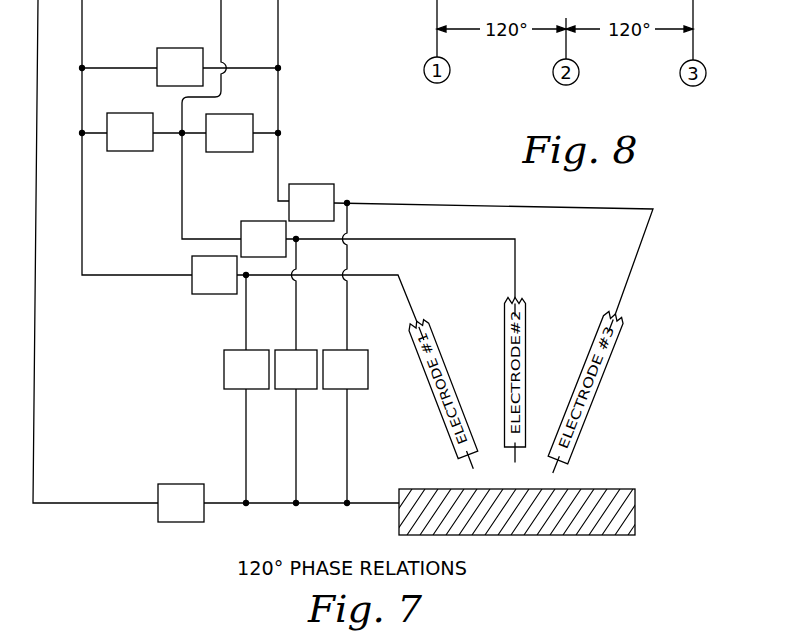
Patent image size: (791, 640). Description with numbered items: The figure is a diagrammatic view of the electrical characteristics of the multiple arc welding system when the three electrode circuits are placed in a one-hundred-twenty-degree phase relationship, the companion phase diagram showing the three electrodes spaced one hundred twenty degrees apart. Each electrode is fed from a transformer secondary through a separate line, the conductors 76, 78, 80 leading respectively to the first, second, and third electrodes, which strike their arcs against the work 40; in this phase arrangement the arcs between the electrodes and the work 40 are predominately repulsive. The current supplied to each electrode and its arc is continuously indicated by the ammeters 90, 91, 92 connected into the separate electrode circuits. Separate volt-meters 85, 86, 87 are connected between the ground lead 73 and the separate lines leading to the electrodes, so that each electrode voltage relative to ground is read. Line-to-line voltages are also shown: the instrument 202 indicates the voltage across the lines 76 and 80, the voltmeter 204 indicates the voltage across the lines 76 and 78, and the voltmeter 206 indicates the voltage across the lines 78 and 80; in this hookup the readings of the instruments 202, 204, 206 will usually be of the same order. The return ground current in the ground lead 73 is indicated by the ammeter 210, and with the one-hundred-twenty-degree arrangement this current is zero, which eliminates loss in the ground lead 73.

The work 40 is at (635, 511).
The ground lead 73 is at (37, 364).
The conductor 76 is at (83, 206).
The conductor 78 is at (182, 187).
The conductor 80 is at (278, 152).
The volt-meter 85 is at (230, 390).
The volt-meter 86 is at (286, 390).
The volt-meter 87 is at (335, 390).
The ammeter 90 is at (197, 294).
The ammeter 91 is at (247, 221).
The ammeter 92 is at (332, 184).
The instrument 202 is at (180, 48).
The voltmeter 204 is at (125, 104).
The voltmeter 206 is at (234, 109).
The ammeter 210 is at (173, 523).